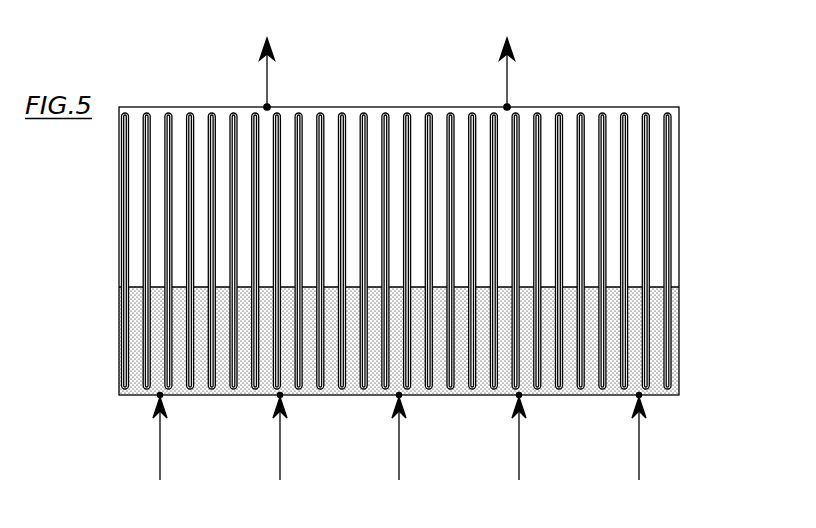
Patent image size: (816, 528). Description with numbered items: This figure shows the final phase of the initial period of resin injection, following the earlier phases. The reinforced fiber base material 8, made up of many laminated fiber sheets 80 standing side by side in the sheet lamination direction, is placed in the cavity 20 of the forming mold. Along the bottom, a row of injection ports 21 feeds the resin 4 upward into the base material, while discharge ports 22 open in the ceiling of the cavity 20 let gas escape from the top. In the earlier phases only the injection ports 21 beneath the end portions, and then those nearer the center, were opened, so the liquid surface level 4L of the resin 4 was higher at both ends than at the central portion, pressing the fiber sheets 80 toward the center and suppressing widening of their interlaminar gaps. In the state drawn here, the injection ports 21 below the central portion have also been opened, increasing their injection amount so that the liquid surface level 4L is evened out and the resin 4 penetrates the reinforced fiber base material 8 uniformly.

The reinforced fiber base material 8 is at (138, 94).
The fiber sheets 80 is at (148, 108).
The cavity 20 is at (672, 188).
The liquid surface level 4L is at (658, 287).
The discharge ports 22 is at (266, 107).
The injection ports 21 is at (153, 398).
The resin 4 is at (399, 451).